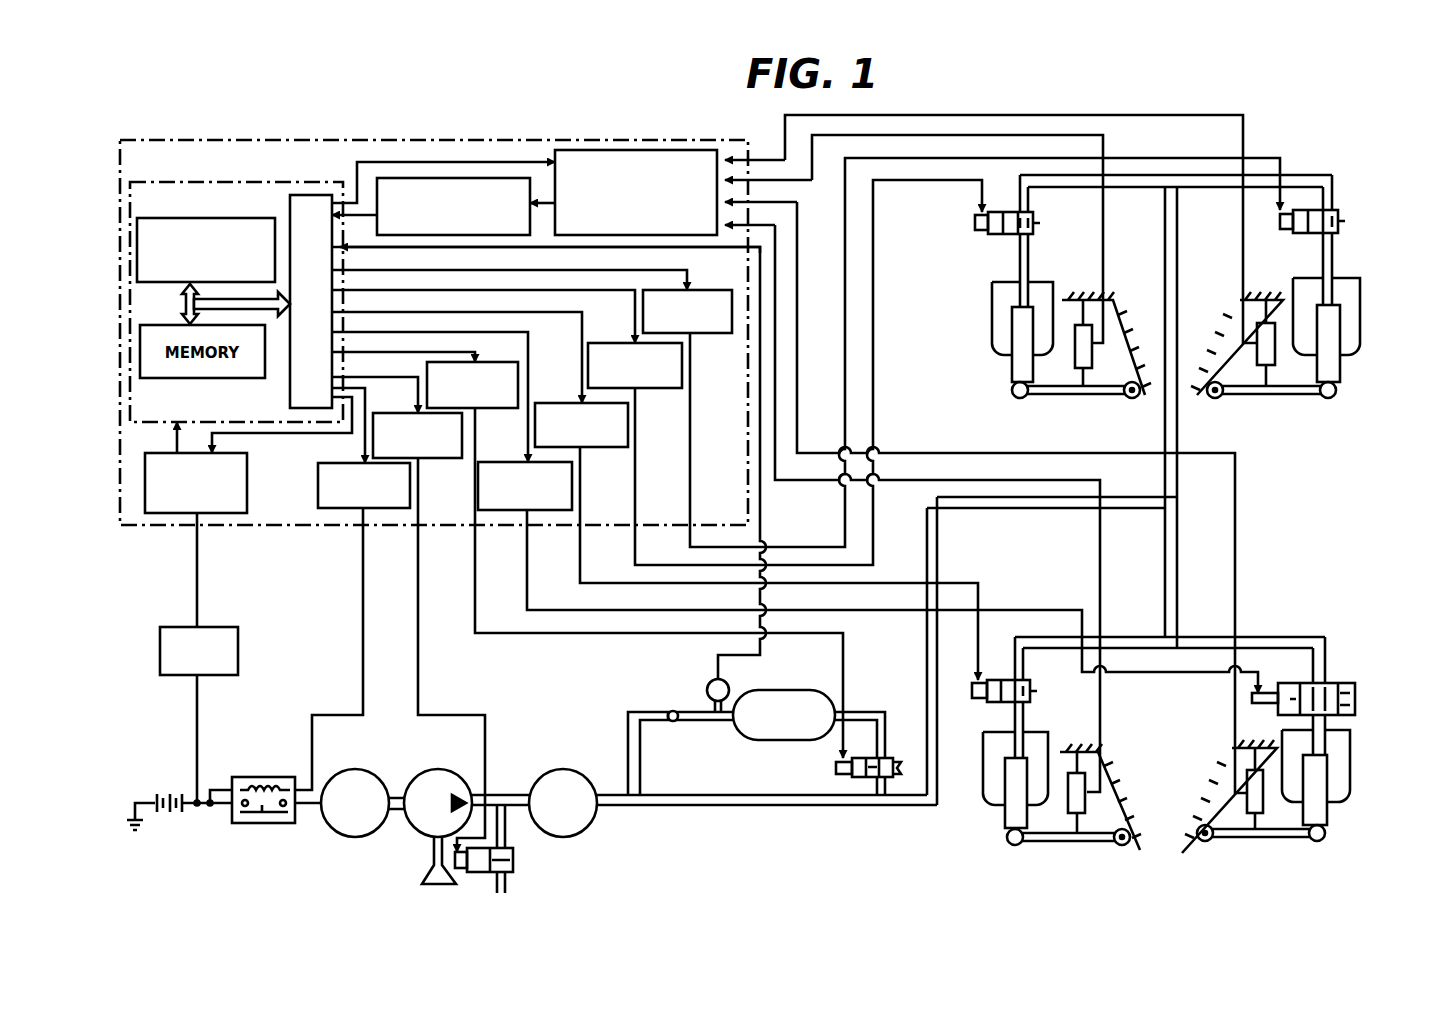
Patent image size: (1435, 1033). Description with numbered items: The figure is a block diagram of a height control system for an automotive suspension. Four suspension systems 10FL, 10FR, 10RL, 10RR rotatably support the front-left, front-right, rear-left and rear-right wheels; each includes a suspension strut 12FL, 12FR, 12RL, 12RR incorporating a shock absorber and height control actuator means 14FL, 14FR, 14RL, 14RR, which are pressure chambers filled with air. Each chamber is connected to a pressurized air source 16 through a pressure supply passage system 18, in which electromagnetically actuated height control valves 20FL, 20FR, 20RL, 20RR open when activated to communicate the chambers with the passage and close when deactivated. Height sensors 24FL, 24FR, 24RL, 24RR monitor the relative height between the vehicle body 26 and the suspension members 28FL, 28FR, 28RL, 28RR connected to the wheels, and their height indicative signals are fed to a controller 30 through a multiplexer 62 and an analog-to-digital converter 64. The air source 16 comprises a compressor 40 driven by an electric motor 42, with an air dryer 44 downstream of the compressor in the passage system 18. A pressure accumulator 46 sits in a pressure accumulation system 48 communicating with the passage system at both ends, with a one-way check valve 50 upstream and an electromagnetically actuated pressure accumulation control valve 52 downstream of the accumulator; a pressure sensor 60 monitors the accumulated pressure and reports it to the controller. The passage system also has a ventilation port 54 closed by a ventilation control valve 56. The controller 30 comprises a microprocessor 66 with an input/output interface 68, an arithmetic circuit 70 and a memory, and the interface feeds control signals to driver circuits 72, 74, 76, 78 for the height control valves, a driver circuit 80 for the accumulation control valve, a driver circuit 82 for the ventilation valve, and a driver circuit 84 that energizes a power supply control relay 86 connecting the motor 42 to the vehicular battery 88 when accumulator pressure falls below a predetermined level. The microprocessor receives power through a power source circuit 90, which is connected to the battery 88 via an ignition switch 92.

The front-left suspension system 10FL is at (1005, 397).
The front-right suspension system 10FR is at (1332, 402).
The rear-left suspension system 10RL is at (1005, 848).
The rear-right suspension system 10RR is at (1325, 845).
The front-left suspension strut 12FL is at (1012, 360).
The front-right suspension strut 12FR is at (1335, 355).
The rear-left suspension strut 12RL is at (1005, 812).
The rear-right suspension strut 12RR is at (1323, 805).
The front-left height control actuator means 14FL is at (1000, 292).
The front-right height control actuator means 14FR is at (1350, 292).
The rear-left height control actuator means 14RL is at (992, 745).
The rear-right height control actuator means 14RR is at (1350, 752).
The pressurized air source 16 is at (785, 820).
The pressure supply passage system 18 is at (937, 540).
The front-left height control valve means 20FL is at (1033, 225).
The front-right height control valve means 20FR is at (1340, 212).
The rear-left height control valve means 20RL is at (1030, 688).
The rear-right height control valve means 20RR is at (1350, 688).
The front-left height sensor 24FL is at (1092, 368).
The front-right height sensor 24FR is at (1262, 366).
The rear-left height sensor 24RL is at (1085, 815).
The rear-right height sensor 24RR is at (1250, 815).
The vehicle body 26 is at (1122, 312).
The front-left suspension member 28FL is at (1062, 395).
The front-right suspension member 28FR is at (1290, 395).
The rear-left suspension member 28RL is at (1050, 842).
The rear-right suspension member 28RR is at (1275, 838).
The controller 30 is at (428, 140).
The motor driven compressor 40 is at (452, 760).
The electric motor 42 is at (378, 831).
The air dryer 44 is at (561, 769).
The pressure accumulator 46 is at (784, 690).
The pressure accumulation system 48 is at (852, 745).
The one-way check valve 50 is at (670, 712).
The pressure accumulation control valve 52 is at (897, 768).
The ventilation port 54 is at (505, 890).
The ventilation control valve 56 is at (490, 872).
The pressure sensor 60 is at (707, 683).
The multiplexer 62 is at (670, 150).
The analog-to-digital converter 64 is at (480, 178).
The microprocessor 66 is at (258, 182).
The input/output interface 68 is at (290, 205).
The arithmetic circuit 70 is at (200, 218).
The driver circuit 72 is at (612, 343).
The driver circuit 74 is at (712, 290).
The driver circuit 76 is at (505, 462).
The driver circuit 78 is at (556, 403).
The driver circuit 80 is at (502, 355).
The driver circuit 82 is at (435, 458).
The driver circuit 84 is at (326, 463).
The power supply control relay 86 is at (280, 823).
The vehicular battery 88 is at (170, 815).
The power source circuit 90 is at (247, 490).
The ignition switch 92 is at (232, 627).